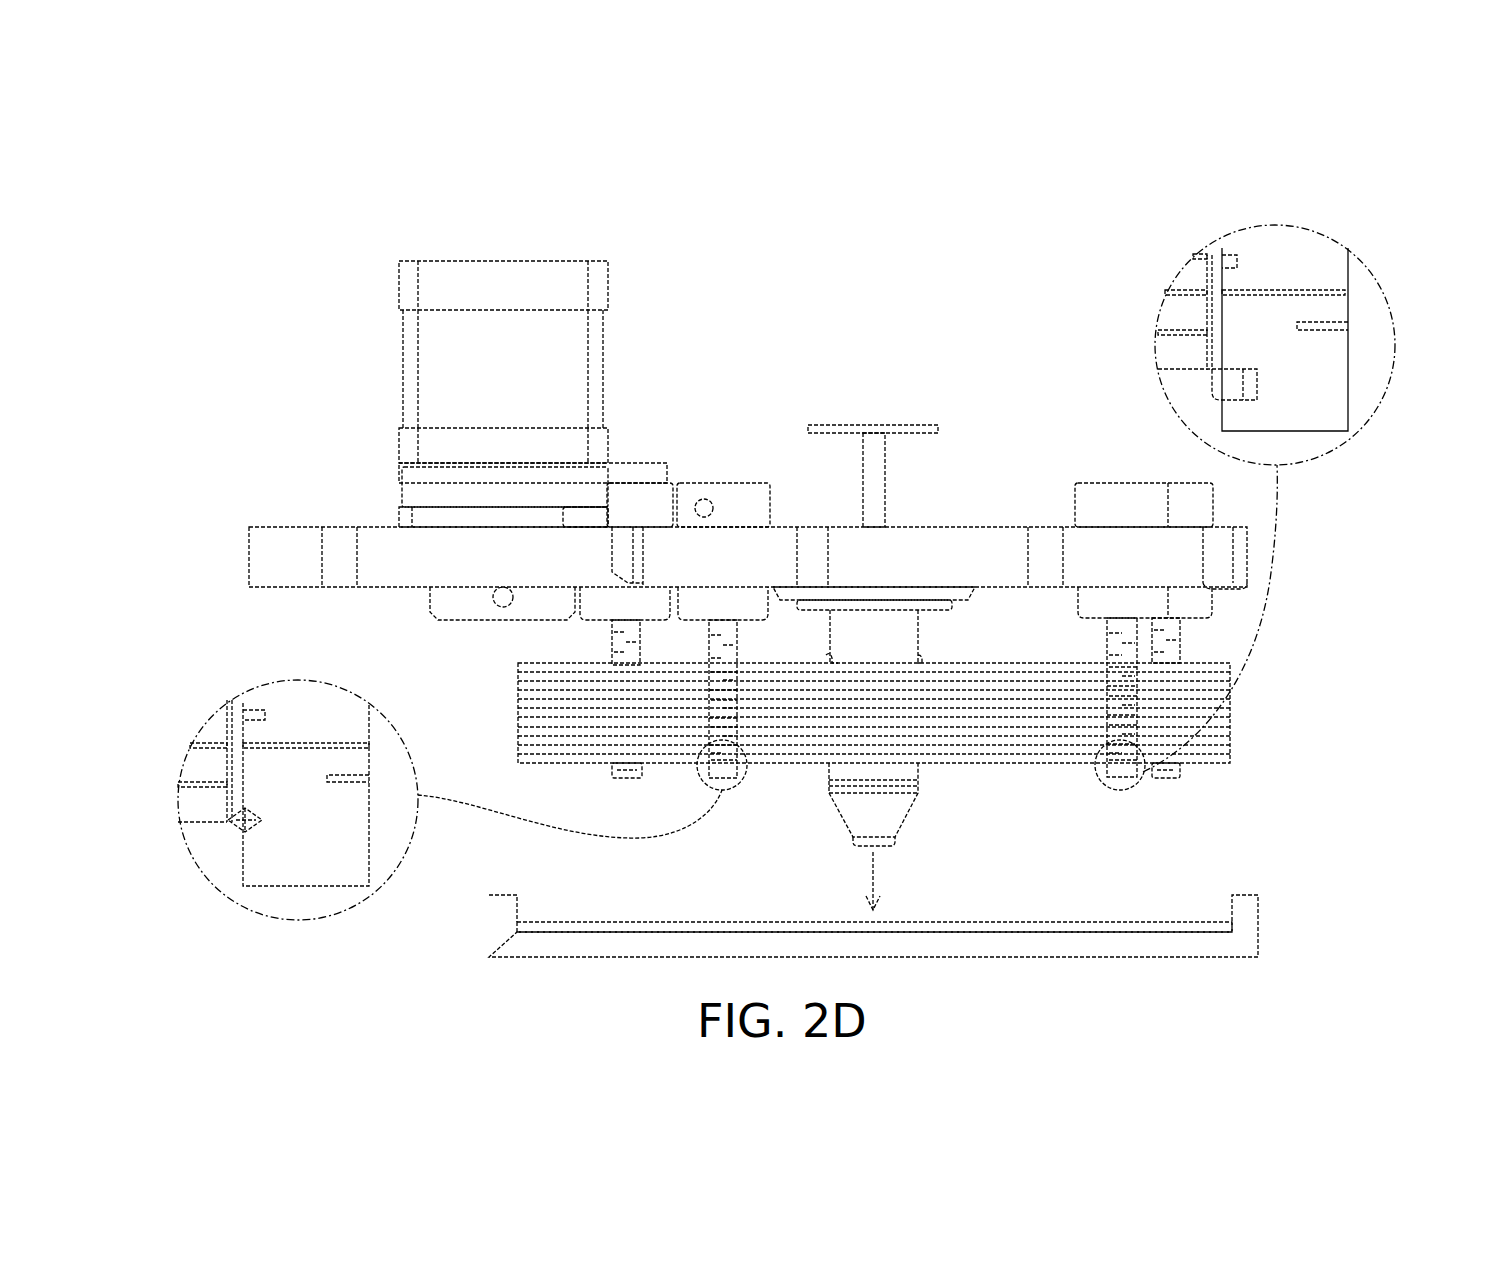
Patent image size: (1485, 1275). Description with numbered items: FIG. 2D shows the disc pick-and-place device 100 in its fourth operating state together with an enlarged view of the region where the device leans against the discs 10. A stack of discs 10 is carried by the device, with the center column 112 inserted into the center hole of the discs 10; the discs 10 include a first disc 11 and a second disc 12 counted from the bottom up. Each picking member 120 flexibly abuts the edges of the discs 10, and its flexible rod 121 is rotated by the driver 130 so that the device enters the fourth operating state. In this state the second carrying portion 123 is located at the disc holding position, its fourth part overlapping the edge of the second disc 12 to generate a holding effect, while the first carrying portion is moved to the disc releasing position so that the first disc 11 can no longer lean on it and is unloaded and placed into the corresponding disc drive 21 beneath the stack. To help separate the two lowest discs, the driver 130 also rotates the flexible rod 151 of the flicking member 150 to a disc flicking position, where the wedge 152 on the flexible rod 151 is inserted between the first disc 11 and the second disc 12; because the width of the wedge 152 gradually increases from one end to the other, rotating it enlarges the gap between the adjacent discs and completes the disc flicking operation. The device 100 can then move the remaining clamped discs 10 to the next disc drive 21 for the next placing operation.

The disc pick-and-place device 100 is at (186, 238).
The discs 10 is at (1290, 752).
The first disc 11 is at (1232, 927).
The second disc 12 is at (1232, 758).
The disc drive 21 is at (1236, 958).
The center column 112 is at (893, 822).
The picking member 120 is at (746, 796).
The flexible rod 121 is at (348, 840).
The second carrying portion 123 is at (248, 830).
The driver 130 is at (633, 300).
The flicking member 150 is at (1100, 783).
The flexible rod 151 is at (1333, 362).
The wedge 152 is at (1220, 385).